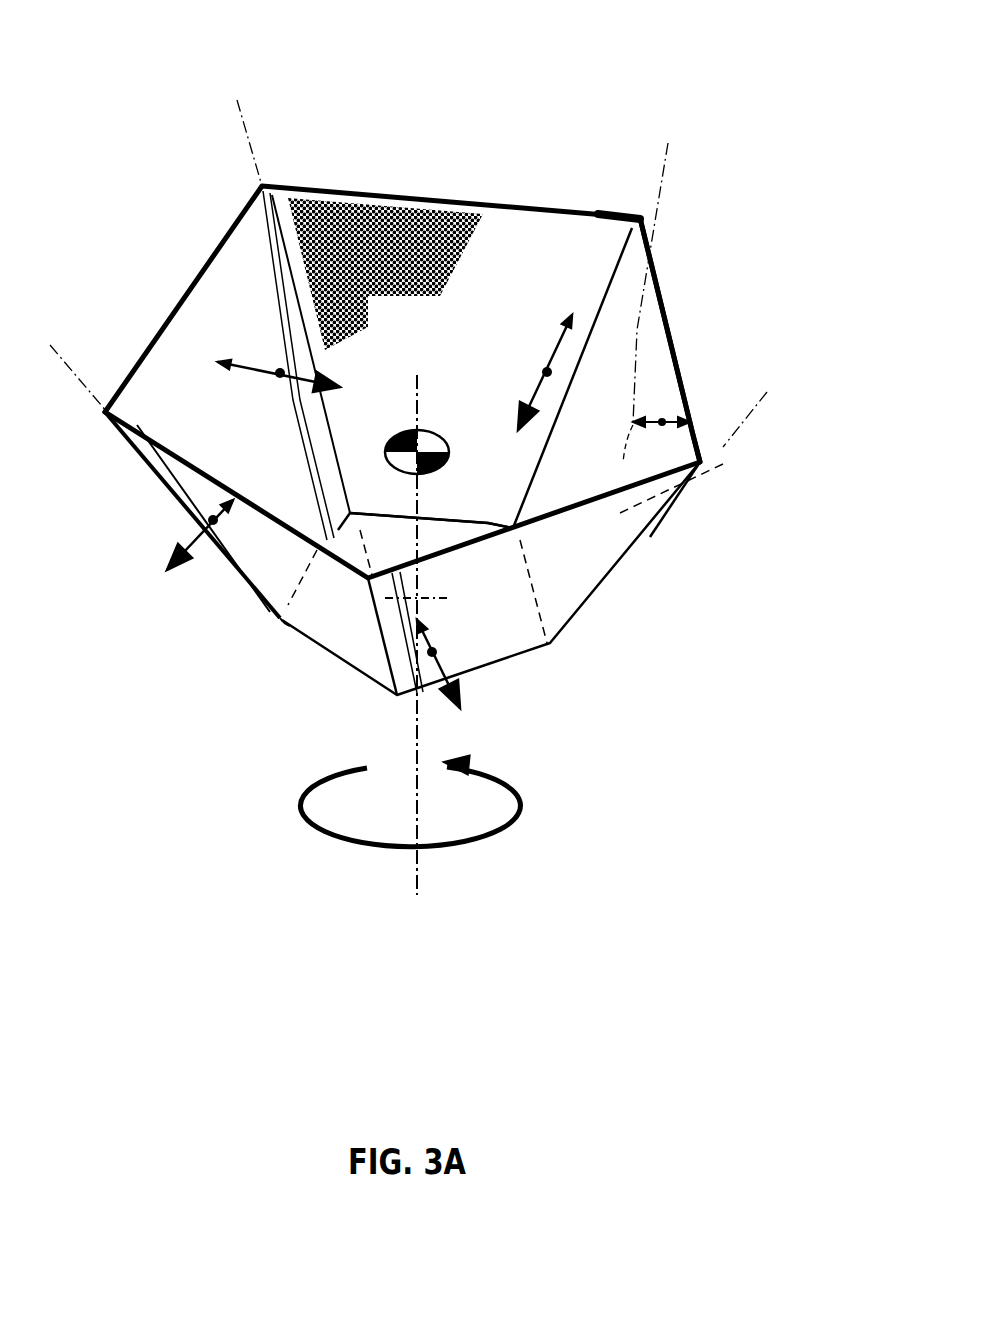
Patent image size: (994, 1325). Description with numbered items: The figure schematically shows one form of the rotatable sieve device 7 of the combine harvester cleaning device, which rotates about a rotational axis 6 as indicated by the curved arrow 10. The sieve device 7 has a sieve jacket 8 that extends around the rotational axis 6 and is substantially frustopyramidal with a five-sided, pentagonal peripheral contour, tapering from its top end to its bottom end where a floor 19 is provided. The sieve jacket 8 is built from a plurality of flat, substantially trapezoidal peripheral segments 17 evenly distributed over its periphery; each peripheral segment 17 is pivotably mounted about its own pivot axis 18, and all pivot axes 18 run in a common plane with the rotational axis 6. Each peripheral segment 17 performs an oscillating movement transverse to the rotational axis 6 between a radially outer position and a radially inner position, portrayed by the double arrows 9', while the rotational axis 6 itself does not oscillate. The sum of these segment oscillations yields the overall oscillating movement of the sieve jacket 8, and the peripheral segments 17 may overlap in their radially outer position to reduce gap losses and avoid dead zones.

The peripheral segment 17 is at (373, 130).
The pivot axis 18 is at (641, 214).
The double arrow 9' is at (655, 303).
The sieve jacket 8 is at (705, 470).
The floor 19 is at (437, 543).
The sieve device 7 is at (205, 600).
The curved arrow 10 is at (307, 820).
The rotational axis 6 is at (417, 885).